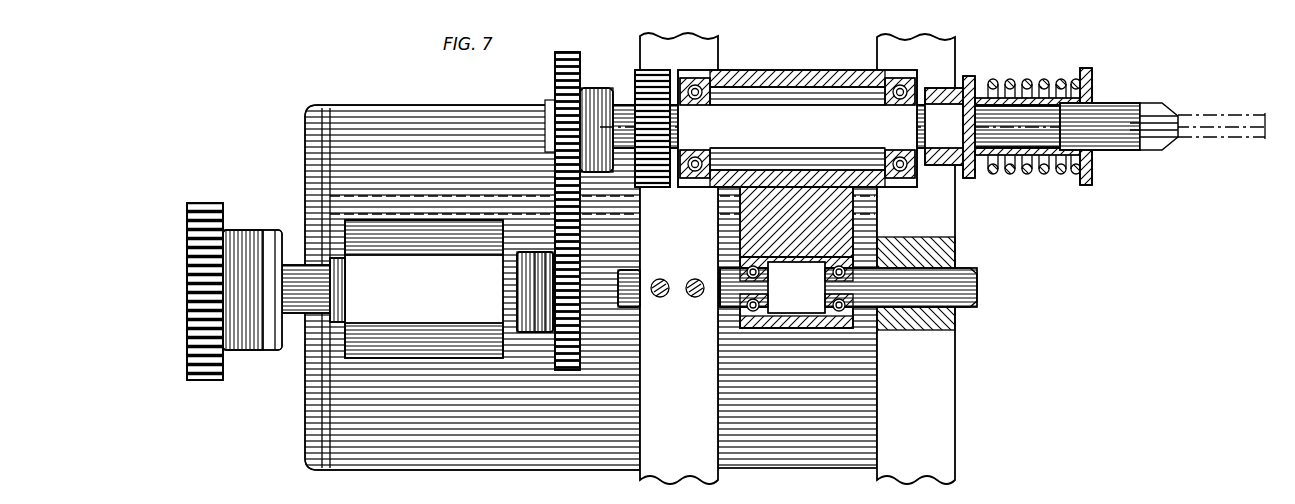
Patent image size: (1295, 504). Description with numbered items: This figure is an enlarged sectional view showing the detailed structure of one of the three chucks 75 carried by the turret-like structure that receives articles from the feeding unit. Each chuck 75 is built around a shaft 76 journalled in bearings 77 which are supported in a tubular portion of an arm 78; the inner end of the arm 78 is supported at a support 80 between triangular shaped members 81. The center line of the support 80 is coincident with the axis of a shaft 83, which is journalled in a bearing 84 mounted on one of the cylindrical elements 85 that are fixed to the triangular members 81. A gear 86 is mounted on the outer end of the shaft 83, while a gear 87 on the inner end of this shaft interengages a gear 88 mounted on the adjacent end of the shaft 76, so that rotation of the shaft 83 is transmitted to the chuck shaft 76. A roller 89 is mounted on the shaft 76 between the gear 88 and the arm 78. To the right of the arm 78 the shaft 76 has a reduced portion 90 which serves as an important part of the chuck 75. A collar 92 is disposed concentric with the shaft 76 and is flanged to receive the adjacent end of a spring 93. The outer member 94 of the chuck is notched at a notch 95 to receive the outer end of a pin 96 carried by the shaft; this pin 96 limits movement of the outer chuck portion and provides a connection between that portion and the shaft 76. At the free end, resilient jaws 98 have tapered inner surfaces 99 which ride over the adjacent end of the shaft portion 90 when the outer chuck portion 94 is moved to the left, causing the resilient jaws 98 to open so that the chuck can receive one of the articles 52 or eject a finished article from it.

The article 52 is at (1232, 139).
The chuck 75 is at (1065, 109).
The shaft 76 is at (800, 118).
The bearings 77 is at (698, 80).
The arm 78 is at (762, 75).
The support 80 is at (745, 282).
The triangular shaped members 81 is at (942, 416).
The shaft 83 is at (296, 262).
The bearing 84 is at (352, 337).
The cylindrical elements 85 is at (553, 460).
The gear 86 is at (190, 282).
The gear 87 is at (566, 274).
The gear 88 is at (557, 80).
The roller 89 is at (638, 80).
The reduced portion 90 is at (1112, 112).
The collar 92 is at (969, 178).
The spring 93 is at (996, 78).
The outer member 94 is at (1094, 82).
The notch 95 is at (1022, 96).
The pin 96 is at (955, 95).
The resilient jaws 98 is at (1167, 122).
The tapered inner surfaces 99 is at (1148, 140).